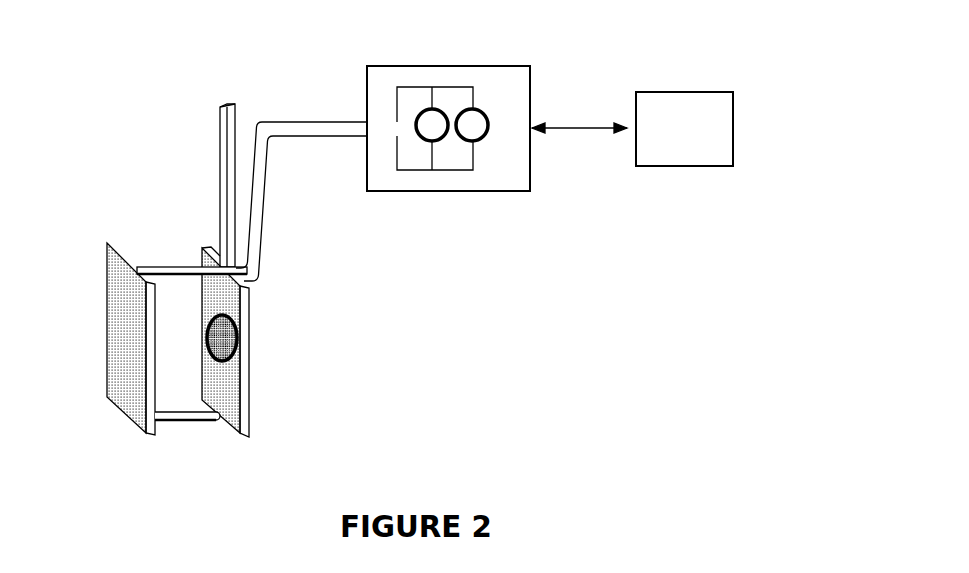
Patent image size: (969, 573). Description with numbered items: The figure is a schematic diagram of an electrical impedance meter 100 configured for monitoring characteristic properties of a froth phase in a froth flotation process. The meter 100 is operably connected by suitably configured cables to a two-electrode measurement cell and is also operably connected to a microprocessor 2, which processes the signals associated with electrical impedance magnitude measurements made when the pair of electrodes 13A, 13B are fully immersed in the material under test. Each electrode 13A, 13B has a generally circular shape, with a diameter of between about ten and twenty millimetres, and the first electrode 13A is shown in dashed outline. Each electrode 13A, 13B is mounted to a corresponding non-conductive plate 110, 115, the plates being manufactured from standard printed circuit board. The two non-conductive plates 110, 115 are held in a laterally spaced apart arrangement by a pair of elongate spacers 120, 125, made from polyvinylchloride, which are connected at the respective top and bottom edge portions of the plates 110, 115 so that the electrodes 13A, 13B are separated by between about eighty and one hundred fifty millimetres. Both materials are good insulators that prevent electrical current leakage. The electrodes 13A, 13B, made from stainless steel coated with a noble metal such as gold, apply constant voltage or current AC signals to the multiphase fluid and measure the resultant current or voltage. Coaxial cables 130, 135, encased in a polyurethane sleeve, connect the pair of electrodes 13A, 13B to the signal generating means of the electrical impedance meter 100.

The microprocessor 2 is at (733, 117).
The electrical impedance meter 100 is at (532, 67).
The non-conductive plate 110 is at (91, 349).
The non-conductive plate 115 is at (238, 376).
The elongate spacer 120 is at (178, 266).
The elongate spacer 125 is at (173, 419).
The coaxial cable 130 is at (318, 120).
The coaxial cable 135 is at (288, 138).
The electrode 13A is at (120, 313).
The electrode 13B is at (220, 362).